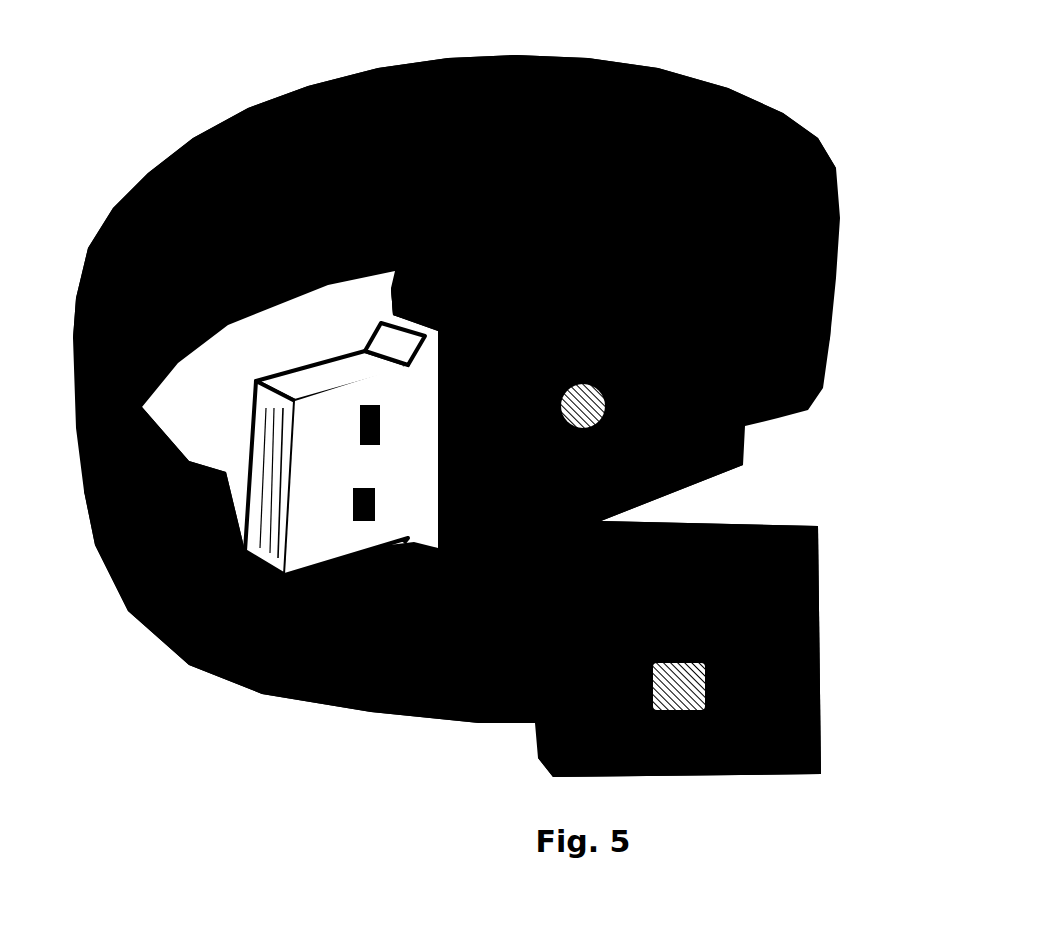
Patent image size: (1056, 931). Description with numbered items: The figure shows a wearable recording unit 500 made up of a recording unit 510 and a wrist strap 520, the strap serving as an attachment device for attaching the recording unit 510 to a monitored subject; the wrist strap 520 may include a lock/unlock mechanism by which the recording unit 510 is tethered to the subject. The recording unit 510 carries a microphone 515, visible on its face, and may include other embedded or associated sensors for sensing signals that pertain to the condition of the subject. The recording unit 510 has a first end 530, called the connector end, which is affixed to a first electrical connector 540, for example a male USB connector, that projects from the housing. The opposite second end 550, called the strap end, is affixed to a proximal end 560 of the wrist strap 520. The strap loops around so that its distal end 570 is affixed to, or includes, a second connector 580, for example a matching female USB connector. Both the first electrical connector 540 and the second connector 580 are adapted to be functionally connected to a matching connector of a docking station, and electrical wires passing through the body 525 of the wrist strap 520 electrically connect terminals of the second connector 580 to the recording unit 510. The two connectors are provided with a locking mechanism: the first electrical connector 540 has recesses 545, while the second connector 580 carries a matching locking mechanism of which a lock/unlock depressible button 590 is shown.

The wearable recording unit 500 is at (883, 117).
The recording unit 510 is at (684, 348).
The microphone 515 is at (575, 398).
The wrist strap 520 is at (192, 121).
The body of wrist strap 525 is at (138, 563).
The first end 530 is at (433, 275).
The first electrical connector 540 is at (262, 474).
The recesses 545 is at (355, 400).
The second end 550 is at (684, 243).
The proximal end 560 is at (764, 276).
The distal end 570 is at (478, 716).
The second connector 580 is at (818, 610).
The lock/unlock depressible button 590 is at (669, 672).